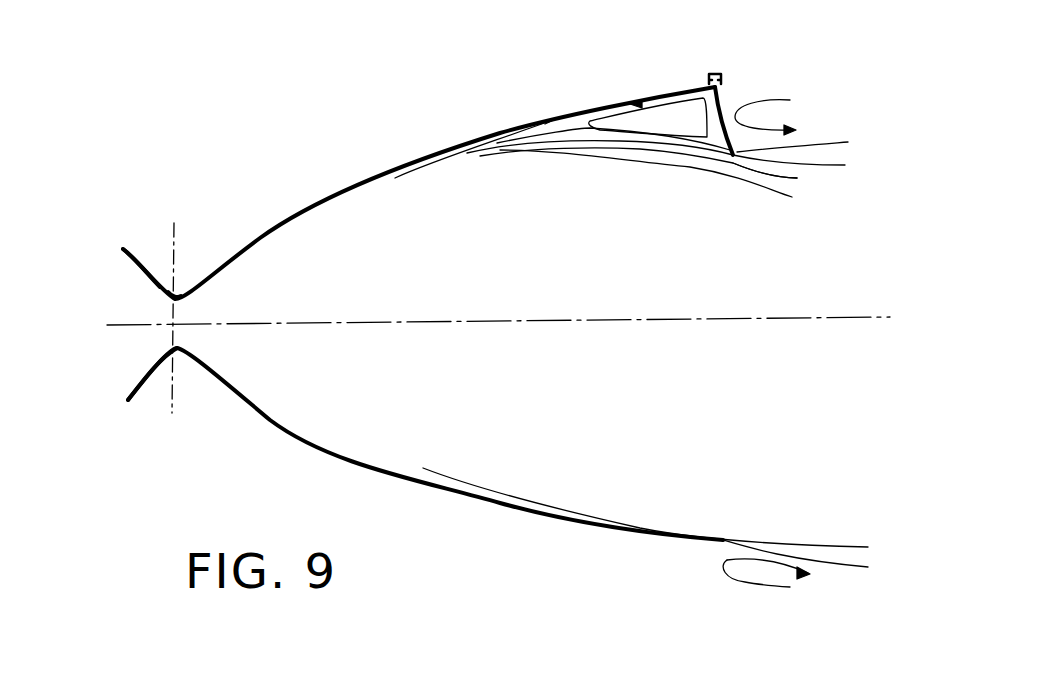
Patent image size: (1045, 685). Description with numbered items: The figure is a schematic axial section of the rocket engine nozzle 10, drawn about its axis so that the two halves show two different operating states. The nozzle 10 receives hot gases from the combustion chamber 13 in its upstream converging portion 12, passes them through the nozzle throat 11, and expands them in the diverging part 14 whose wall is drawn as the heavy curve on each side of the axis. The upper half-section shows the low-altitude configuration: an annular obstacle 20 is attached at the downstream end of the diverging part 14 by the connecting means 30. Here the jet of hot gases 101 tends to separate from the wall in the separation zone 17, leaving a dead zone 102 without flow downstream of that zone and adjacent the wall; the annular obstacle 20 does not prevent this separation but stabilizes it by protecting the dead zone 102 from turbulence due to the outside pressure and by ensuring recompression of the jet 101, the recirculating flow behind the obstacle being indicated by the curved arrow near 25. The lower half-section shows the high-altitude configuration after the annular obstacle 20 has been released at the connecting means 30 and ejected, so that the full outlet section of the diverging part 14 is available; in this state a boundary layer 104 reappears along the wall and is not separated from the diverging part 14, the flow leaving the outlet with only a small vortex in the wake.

The nozzle 10 is at (298, 207).
The nozzle throat 11 is at (167, 292).
The upstream converging portion 12 is at (127, 259).
The combustion chamber 13 is at (135, 350).
The diverging part 14 is at (430, 152).
The separation zone 17 is at (552, 120).
The annular obstacle 20 is at (722, 100).
The wake 25 is at (781, 180).
The connecting means 30 is at (716, 72).
The jet of hot gases 101 is at (645, 152).
The dead zone 102 is at (658, 95).
The boundary layer 104 is at (642, 523).